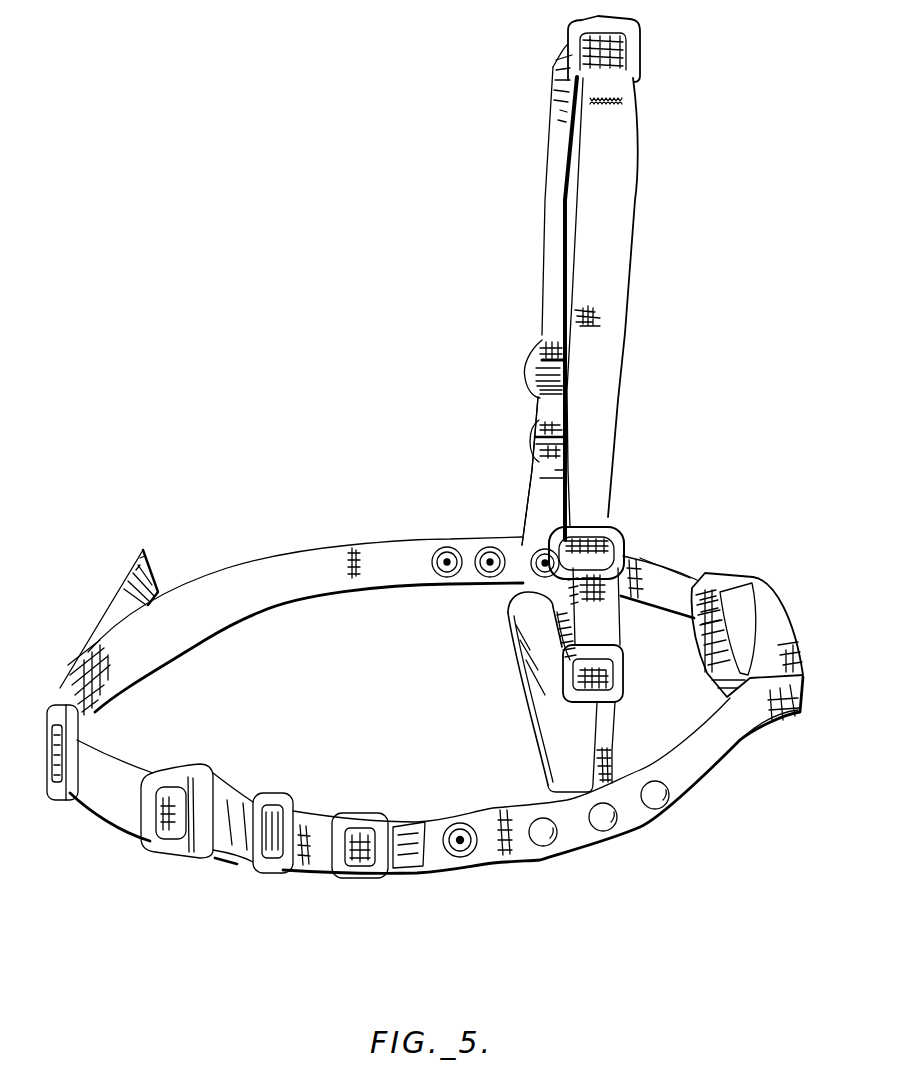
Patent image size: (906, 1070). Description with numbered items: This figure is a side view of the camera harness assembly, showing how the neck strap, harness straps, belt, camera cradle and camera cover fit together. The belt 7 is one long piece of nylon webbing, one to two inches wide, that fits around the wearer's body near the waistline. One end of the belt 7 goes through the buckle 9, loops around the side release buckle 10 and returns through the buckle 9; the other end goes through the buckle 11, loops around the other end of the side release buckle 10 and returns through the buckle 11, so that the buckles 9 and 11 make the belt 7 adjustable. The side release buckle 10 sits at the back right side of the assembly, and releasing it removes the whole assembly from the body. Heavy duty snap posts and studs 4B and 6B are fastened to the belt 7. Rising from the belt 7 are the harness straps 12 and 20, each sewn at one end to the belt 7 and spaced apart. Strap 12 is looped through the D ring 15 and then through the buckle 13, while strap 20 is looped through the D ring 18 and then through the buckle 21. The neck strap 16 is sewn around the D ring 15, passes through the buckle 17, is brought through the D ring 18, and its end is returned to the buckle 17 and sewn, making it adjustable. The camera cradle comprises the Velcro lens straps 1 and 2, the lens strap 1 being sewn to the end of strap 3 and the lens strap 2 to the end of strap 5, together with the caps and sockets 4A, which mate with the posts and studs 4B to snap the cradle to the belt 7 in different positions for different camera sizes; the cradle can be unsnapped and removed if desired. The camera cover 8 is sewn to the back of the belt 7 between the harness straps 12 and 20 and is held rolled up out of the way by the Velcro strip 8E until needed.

The lens strap 1 is at (765, 600).
The lens strap 2 is at (698, 625).
The strap 3 is at (747, 728).
The caps and sockets 4A is at (550, 846).
The posts and studs 4B is at (460, 857).
The strap 5 is at (658, 580).
The posts and studs 6B is at (560, 590).
The belt 7 is at (275, 590).
The camera cover 8 is at (537, 673).
The Velcro strip 8E is at (545, 645).
The buckle 9 is at (370, 815).
The side release buckle 10 is at (197, 768).
The buckle 11 is at (88, 726).
The harness strap 12 is at (540, 490).
The buckle 13 is at (529, 442).
The D ring 15 is at (536, 366).
The neck strap 16 is at (550, 158).
The buckle 17 is at (636, 42).
The D ring 18 is at (620, 548).
The harness strap 20 is at (610, 607).
The buckle 21 is at (620, 683).